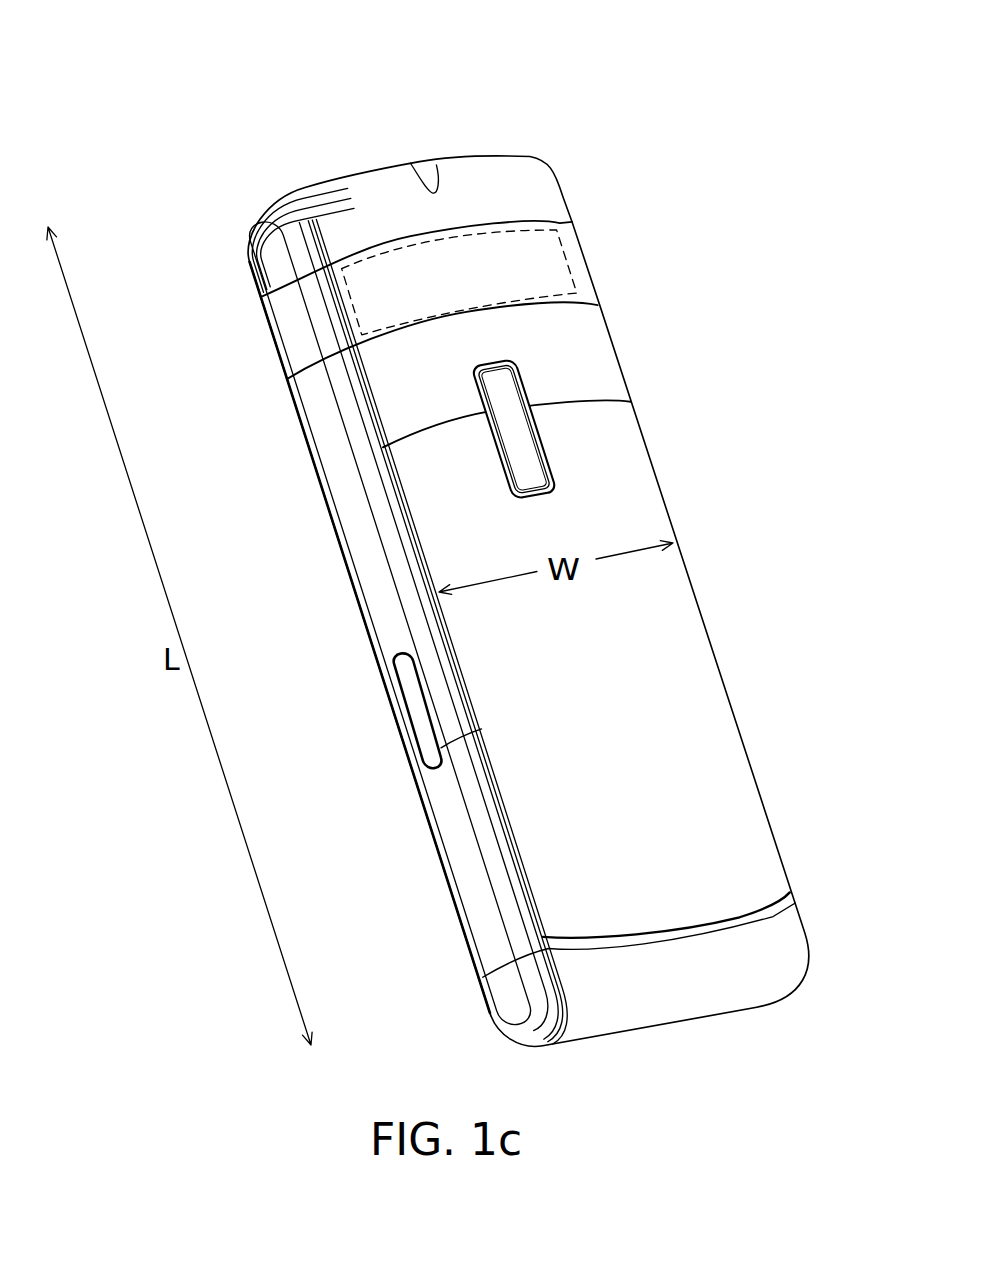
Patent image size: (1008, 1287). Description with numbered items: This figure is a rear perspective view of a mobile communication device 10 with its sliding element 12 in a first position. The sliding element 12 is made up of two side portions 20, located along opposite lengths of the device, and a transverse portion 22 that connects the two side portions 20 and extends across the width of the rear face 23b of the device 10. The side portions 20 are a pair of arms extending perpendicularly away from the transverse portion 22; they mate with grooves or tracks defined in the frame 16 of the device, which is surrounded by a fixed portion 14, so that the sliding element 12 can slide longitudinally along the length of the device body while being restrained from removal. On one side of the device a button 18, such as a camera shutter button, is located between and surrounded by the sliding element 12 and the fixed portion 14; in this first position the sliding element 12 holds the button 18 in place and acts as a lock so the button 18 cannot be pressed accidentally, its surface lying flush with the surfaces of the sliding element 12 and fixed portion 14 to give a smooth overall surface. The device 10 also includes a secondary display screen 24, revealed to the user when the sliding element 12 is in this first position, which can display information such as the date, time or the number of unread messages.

The mobile communication device 10 is at (492, 99).
The sliding element 12 is at (610, 327).
The fixed portion 14 is at (462, 838).
The frame 16 is at (310, 330).
The button 18 is at (413, 695).
The side portions 20 is at (332, 463).
The transverse portion 22 is at (577, 371).
The rear face 23b is at (711, 742).
The secondary display screen 24 is at (457, 277).